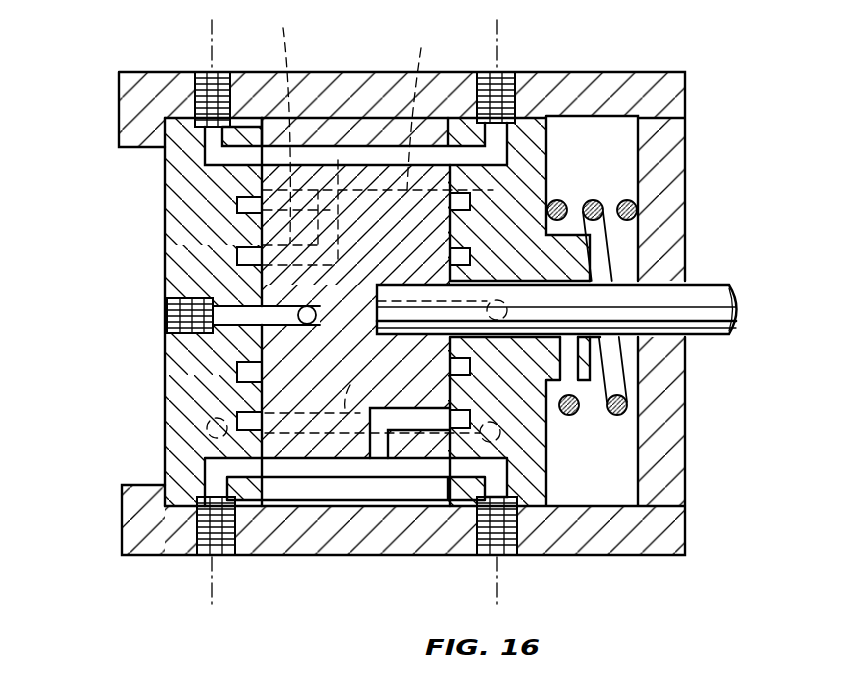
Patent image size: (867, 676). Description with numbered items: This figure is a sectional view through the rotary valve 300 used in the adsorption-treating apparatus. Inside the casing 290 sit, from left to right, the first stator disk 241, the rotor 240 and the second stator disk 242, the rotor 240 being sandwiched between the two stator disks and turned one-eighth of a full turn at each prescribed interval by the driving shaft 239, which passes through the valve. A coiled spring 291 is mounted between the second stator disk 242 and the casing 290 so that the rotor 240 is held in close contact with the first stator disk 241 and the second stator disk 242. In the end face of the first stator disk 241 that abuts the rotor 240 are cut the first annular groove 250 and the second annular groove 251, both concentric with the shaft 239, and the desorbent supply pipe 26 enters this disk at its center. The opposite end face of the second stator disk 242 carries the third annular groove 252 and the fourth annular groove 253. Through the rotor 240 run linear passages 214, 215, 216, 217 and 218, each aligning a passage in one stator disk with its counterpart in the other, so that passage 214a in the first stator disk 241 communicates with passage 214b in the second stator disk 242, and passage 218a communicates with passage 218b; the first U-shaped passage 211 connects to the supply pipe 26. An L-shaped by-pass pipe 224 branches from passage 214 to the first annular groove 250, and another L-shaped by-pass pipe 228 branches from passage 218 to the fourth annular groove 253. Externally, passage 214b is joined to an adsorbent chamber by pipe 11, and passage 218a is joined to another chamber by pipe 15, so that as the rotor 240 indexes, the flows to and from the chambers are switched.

The pipe 11 is at (505, 52).
The pipe 15 is at (505, 580).
The desorbent supply pipe 26 is at (167, 318).
The first U-shaped passage 211 is at (268, 300).
The linear passage 214 is at (345, 146).
The passage 214a is at (212, 142).
The passage 214b is at (502, 138).
The linear passage 215 is at (426, 106).
The linear passage 216 is at (420, 300).
The linear passage 217 is at (353, 407).
The linear passage 218 is at (427, 468).
The passage 218a is at (218, 478).
The passage 218b is at (500, 472).
The L-shaped by-pass pipe 224 is at (277, 124).
The L-shaped by-pass pipe 228 is at (457, 421).
The driving shaft 239 is at (712, 292).
The rotor 240 is at (367, 490).
The first stator disk 241 is at (175, 406).
The second stator disk 242 is at (543, 467).
The first annular groove 250 is at (237, 372).
The second annular groove 251 is at (262, 425).
The third annular groove 252 is at (470, 368).
The fourth annular groove 253 is at (465, 418).
The casing 290 is at (693, 170).
The coiled spring 291 is at (690, 372).
The rotary valve 300 is at (715, 124).